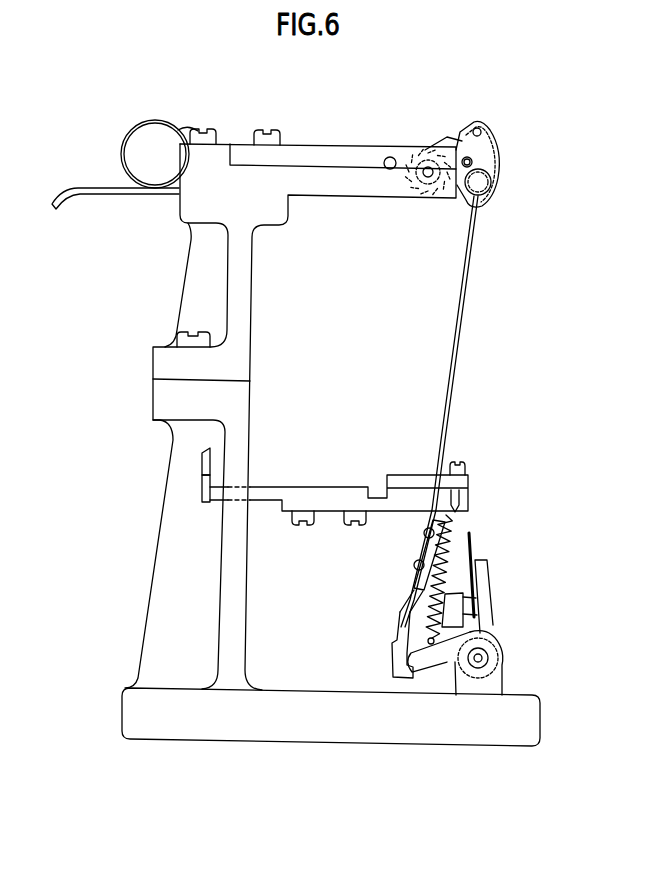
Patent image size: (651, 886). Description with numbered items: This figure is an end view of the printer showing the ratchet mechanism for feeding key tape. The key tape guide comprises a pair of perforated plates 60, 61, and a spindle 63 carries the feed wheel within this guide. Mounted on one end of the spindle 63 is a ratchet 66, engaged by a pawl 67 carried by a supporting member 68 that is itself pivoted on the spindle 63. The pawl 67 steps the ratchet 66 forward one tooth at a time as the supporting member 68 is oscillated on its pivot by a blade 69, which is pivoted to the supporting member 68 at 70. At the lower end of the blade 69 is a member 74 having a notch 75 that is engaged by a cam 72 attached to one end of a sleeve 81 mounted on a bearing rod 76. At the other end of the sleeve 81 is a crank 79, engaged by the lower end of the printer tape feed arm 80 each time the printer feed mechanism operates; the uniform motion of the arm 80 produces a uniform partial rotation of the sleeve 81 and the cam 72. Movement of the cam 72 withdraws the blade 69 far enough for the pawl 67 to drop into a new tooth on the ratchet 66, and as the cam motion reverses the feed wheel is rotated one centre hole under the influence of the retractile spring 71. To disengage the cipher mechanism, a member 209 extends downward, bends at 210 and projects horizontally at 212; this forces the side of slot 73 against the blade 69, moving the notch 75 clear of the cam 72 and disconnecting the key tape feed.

The perforated plate 60 is at (122, 138).
The perforated plate 61 is at (120, 195).
The spindle 63 is at (428, 186).
The ratchet 66 is at (428, 148).
The pawl 67 is at (462, 138).
The supporting member 68 is at (497, 140).
The blade 69 is at (468, 266).
The pivot 70 is at (494, 182).
The retractile spring 71 is at (452, 532).
The cam 72 is at (447, 665).
The slot 73 is at (448, 476).
The member 74 is at (418, 590).
The notch 75 is at (396, 656).
The bearing rod 76 is at (490, 662).
The crank 79 is at (452, 594).
The printer tape feed arm 80 is at (472, 540).
The sleeve 81 is at (503, 655).
The member 209 is at (202, 468).
The bend 210 is at (202, 498).
The horizontal projection 212 is at (312, 487).